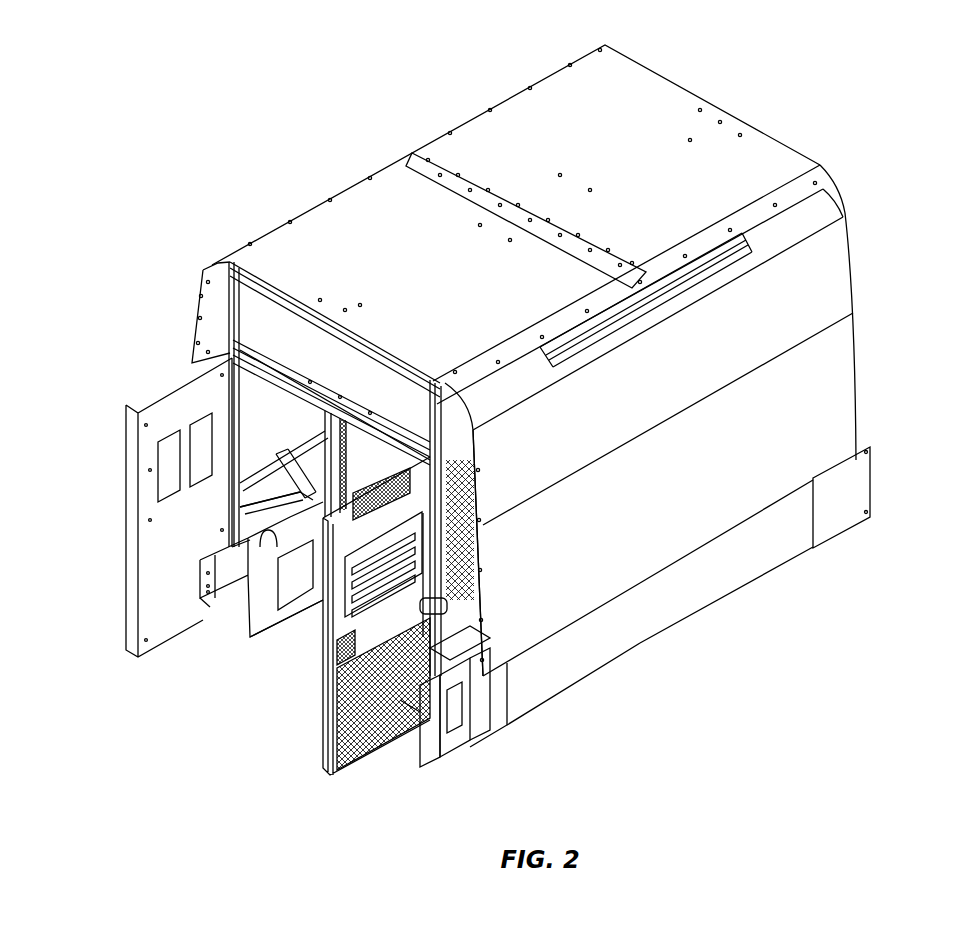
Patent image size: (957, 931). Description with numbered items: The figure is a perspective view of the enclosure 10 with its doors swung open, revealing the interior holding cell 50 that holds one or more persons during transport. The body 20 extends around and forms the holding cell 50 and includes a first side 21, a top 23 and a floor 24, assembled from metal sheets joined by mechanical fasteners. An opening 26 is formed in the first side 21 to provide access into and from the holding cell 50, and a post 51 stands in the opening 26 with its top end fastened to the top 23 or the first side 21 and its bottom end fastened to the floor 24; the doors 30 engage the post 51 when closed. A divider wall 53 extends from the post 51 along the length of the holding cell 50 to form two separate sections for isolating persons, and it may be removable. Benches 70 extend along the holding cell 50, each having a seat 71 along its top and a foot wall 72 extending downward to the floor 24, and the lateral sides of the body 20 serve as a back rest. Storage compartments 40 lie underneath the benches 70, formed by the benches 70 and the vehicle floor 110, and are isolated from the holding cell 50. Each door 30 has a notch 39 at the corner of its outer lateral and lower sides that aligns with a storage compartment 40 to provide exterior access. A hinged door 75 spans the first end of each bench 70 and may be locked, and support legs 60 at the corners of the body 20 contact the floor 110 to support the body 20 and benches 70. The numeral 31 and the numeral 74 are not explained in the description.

The enclosure 10 is at (352, 130).
The body 20 is at (498, 423).
The first side 21 is at (262, 322).
The top 23 is at (540, 103).
The floor 24 is at (300, 633).
The opening 26 is at (220, 320).
The door 30 is at (160, 538).
The door frame flange 31 is at (197, 327).
The notch 39 is at (210, 607).
The storage compartment 40 is at (628, 628).
The holding cell 50 is at (272, 405).
The post 51 is at (330, 425).
The divider wall 53 is at (372, 452).
The support leg 60 is at (845, 497).
The bench 70 is at (248, 592).
The seat 71 is at (236, 572).
The foot wall 72 is at (268, 583).
The lower bracket 74 is at (470, 723).
The door 75 is at (230, 580).
The floor 110 is at (683, 602).